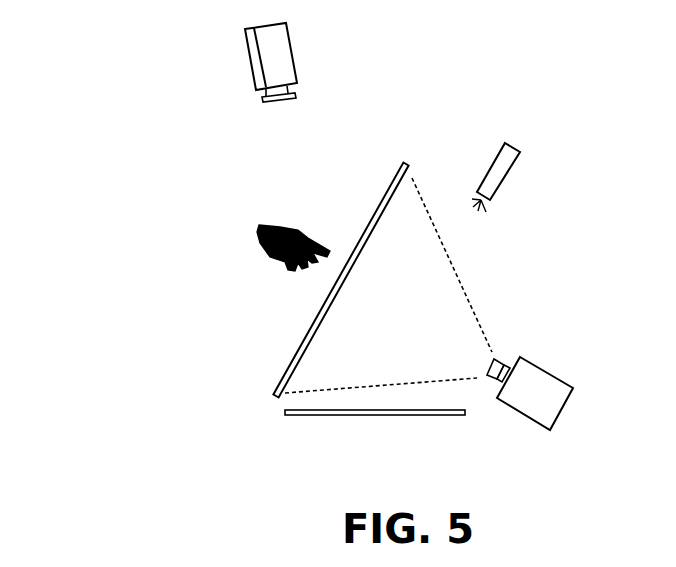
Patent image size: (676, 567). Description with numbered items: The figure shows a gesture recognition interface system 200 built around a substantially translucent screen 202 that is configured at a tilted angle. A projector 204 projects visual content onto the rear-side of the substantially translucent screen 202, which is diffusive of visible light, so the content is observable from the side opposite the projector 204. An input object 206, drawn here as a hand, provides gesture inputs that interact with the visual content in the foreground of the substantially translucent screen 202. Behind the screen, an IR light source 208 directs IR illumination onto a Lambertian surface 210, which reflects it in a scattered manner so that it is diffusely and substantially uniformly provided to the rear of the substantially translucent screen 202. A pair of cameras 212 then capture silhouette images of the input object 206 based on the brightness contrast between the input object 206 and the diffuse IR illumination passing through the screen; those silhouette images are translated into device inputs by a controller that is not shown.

The gesture recognition interface system 200 is at (95, 49).
The substantially translucent screen 202 is at (392, 183).
The projector 204 is at (543, 370).
The input object 206 is at (260, 230).
The IR light source 208 is at (517, 148).
The Lambertian surface 210 is at (413, 416).
The cameras 212 is at (292, 44).